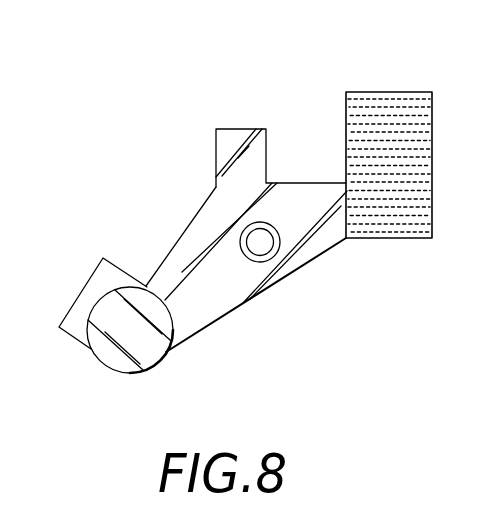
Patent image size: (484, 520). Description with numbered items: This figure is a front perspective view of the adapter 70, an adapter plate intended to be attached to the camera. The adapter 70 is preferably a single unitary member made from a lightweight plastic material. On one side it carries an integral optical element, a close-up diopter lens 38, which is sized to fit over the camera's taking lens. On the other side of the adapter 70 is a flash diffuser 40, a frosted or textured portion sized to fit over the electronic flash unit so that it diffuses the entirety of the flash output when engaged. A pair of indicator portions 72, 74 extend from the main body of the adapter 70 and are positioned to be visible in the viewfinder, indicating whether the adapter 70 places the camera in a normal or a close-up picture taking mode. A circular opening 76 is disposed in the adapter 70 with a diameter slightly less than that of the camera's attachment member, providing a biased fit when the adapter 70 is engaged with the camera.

The flash diffuser 40 is at (390, 92).
The adapter 70 is at (253, 305).
The indicator portion 74 is at (230, 129).
The indicator portion 72 is at (100, 263).
The close-up diopter lens 38 is at (107, 370).
The circular opening 76 is at (259, 241).